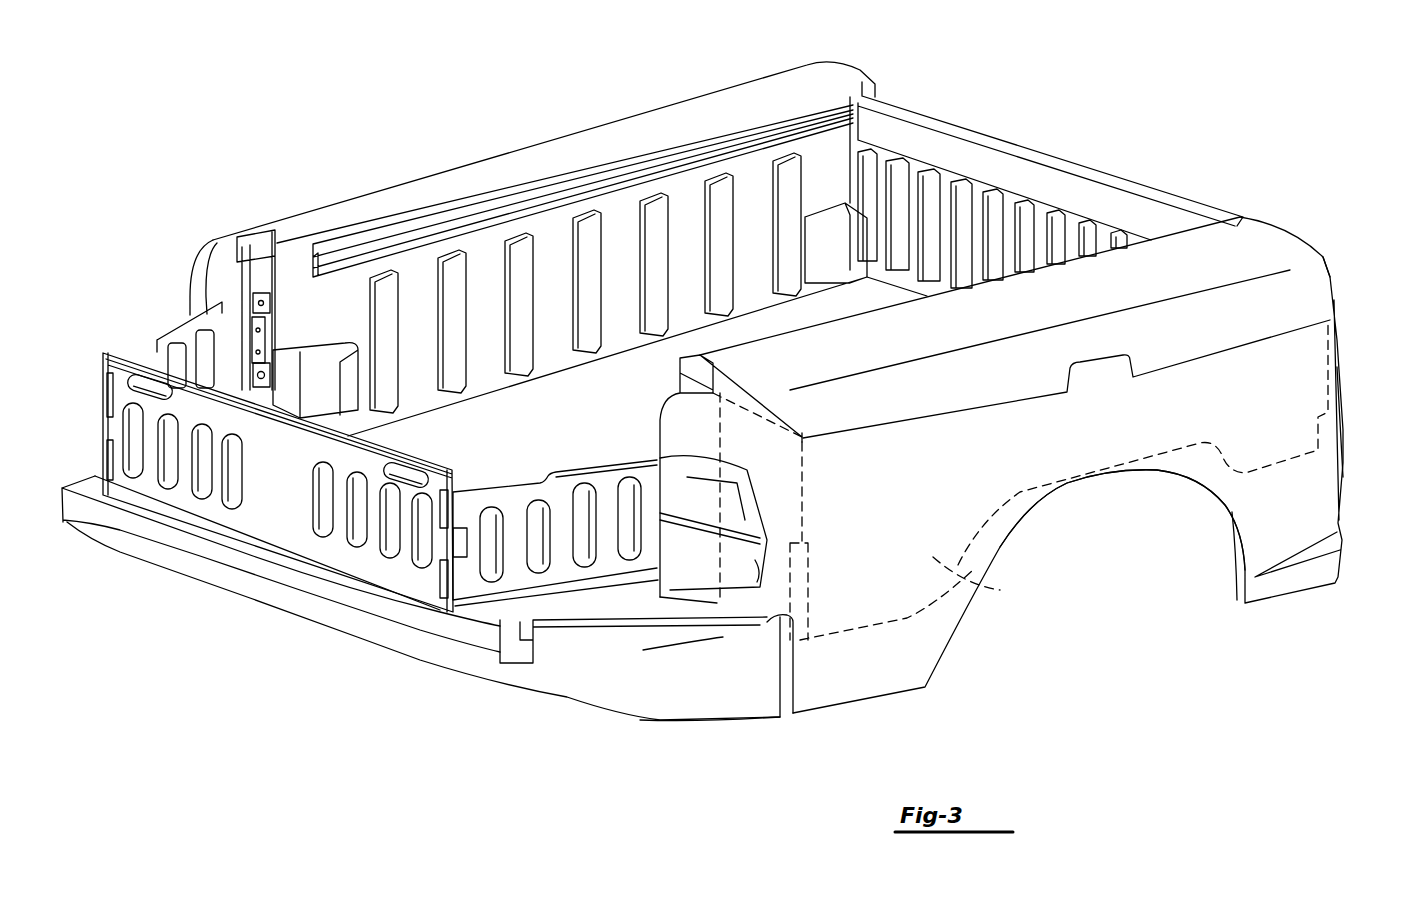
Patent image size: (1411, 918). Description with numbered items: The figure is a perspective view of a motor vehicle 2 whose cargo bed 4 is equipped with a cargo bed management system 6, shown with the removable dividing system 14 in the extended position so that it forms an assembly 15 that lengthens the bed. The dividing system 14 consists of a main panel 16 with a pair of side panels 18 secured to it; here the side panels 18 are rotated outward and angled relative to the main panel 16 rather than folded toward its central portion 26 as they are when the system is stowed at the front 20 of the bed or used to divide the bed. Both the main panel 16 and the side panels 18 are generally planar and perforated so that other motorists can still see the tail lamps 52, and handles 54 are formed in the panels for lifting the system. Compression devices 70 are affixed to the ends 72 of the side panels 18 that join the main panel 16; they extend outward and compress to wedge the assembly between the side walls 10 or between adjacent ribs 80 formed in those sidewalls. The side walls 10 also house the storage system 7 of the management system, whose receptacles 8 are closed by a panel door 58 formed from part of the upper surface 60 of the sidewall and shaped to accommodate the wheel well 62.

The motor vehicle 2 is at (1363, 382).
The cargo bed 4 is at (1036, 142).
The cargo bed management system 6 is at (436, 105).
The storage system 7 is at (1298, 226).
The receptacles 8 is at (992, 591).
The side walls 10 is at (823, 150).
The dividing system 14 is at (100, 348).
The assembly 15 is at (172, 530).
The main panel 16 is at (290, 494).
The side panels 18 is at (467, 580).
The front 20 is at (1137, 205).
The central portion 26 is at (323, 563).
The tail lamps 52 is at (703, 557).
The handles 54 is at (140, 370).
The panel door 58 is at (618, 130).
The upper surface 60 is at (652, 120).
The wheel well 62 is at (1110, 483).
The compression devices 70 is at (107, 455).
The ends 72 is at (465, 492).
The ribs 80 is at (525, 265).